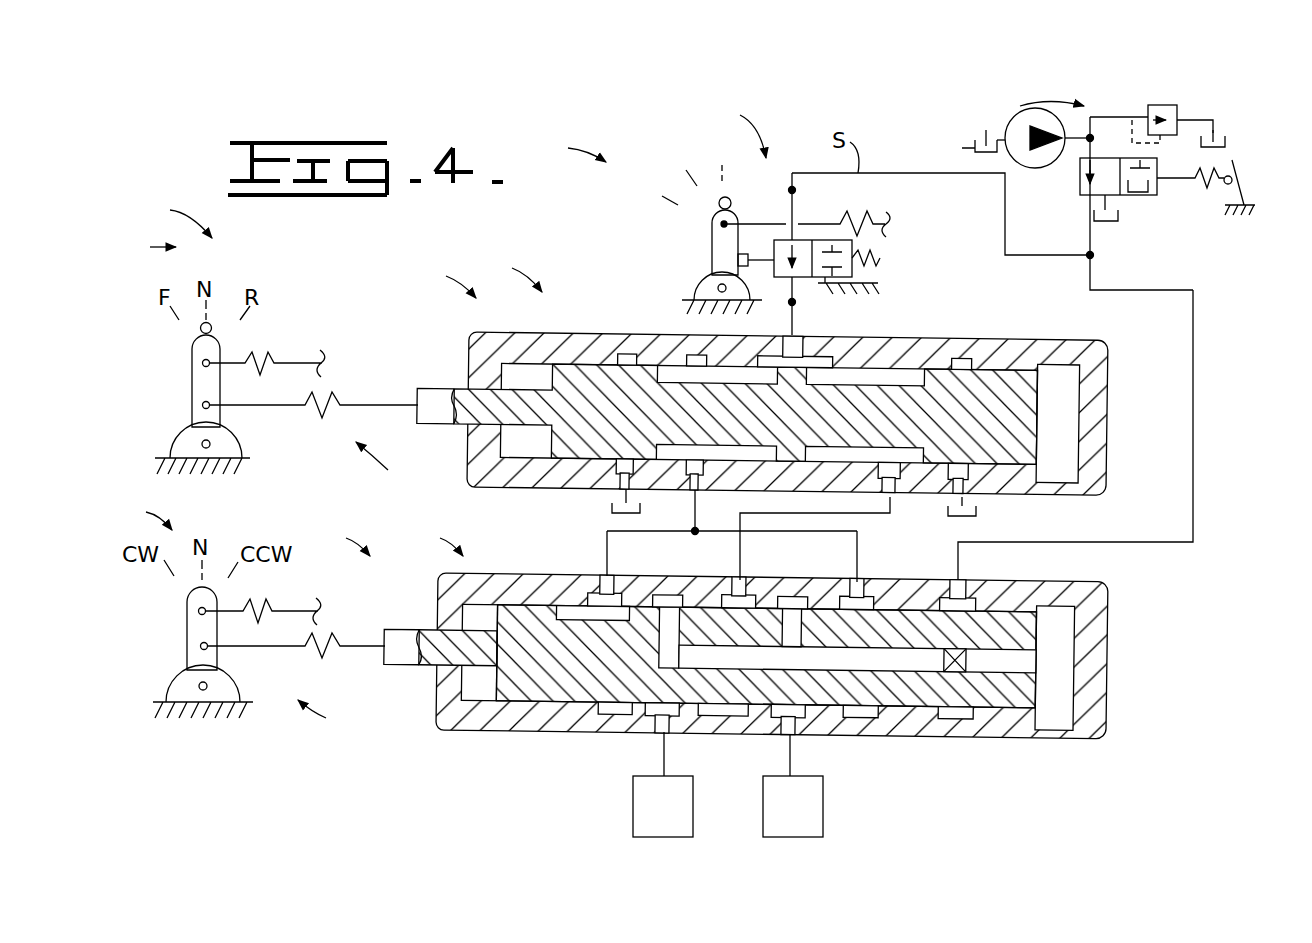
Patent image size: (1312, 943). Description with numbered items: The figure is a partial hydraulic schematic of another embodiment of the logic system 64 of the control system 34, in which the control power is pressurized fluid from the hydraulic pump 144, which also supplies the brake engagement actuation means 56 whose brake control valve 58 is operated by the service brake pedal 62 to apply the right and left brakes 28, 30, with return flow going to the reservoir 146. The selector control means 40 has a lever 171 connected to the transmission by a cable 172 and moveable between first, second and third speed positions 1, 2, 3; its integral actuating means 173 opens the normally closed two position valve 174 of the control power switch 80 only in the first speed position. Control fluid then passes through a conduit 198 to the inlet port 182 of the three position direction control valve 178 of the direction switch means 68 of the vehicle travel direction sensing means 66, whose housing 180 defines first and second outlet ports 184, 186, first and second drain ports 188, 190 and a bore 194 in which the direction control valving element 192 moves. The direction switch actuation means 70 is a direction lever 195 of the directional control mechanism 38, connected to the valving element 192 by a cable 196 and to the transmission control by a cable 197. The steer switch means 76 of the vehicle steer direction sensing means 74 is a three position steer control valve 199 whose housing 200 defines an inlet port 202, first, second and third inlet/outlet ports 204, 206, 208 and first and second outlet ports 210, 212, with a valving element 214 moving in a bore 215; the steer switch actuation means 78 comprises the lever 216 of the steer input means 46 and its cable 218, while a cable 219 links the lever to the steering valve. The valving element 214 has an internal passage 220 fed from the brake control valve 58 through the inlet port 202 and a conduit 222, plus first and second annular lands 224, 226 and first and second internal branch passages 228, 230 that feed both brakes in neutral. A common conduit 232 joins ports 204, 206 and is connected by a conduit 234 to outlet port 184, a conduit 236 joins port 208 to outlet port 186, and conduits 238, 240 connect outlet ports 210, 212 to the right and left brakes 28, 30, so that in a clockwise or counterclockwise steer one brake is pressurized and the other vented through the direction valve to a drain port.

The first speed position 1 is at (723, 160).
The second speed position 2 is at (682, 167).
The third speed position 3 is at (659, 192).
The right brake 28 is at (823, 815).
The left brake 30 is at (633, 812).
The control system 34 is at (139, 247).
The directional control mechanism 38 is at (170, 333).
The selector control means 40 is at (568, 147).
The steer input means 46 is at (137, 514).
The brake engagement actuation means 56 is at (1035, 128).
The brake control valve 58 is at (1160, 200).
The service brake pedal 62 is at (1240, 176).
The logic system 64 is at (169, 218).
The vehicle travel direction sensing means 66 is at (443, 279).
The direction switch means 68 is at (508, 271).
The direction switch actuation means 70 is at (386, 462).
The vehicle steer direction sensing means 74 is at (338, 538).
The steer switch means 76 is at (433, 538).
The steer switch actuation means 78 is at (327, 716).
The control power switch 80 is at (732, 130).
The hydraulic pump 144 is at (1010, 124).
The reservoir 146 is at (962, 148).
The lever 171 is at (718, 245).
The cable 172 is at (814, 222).
The actuating means 173 is at (746, 232).
The two position valve 174 is at (848, 290).
The three position direction control valve 178 is at (469, 366).
The housing 180 is at (557, 337).
The inlet port 182 is at (786, 338).
The first outlet port 184 is at (694, 490).
The second outlet port 186 is at (888, 497).
The first drain port 188 is at (622, 489).
The second drain port 190 is at (966, 497).
The direction control valving element 192 is at (648, 417).
The bore 194 is at (905, 364).
The direction lever 195 is at (198, 386).
The cable 196 is at (272, 405).
The cable 197 is at (293, 355).
The conduit 198 is at (800, 316).
The three position steer control valve 199 is at (438, 606).
The housing 200 is at (480, 578).
The inlet port 202 is at (960, 588).
The first inlet/outlet port 204 is at (606, 582).
The second inlet/outlet port 206 is at (858, 588).
The third inlet/outlet port 208 is at (740, 582).
The first outlet port 210 is at (795, 738).
The second outlet port 212 is at (660, 738).
The valving element 214 is at (576, 665).
The bore 215 is at (546, 696).
The lever 216 is at (194, 626).
The cable 218 is at (272, 647).
The cable 219 is at (282, 610).
The internal passage 220 is at (879, 665).
The conduit 222 is at (1195, 400).
The first annular land 224 is at (835, 606).
The second annular land 226 is at (594, 590).
The first internal branch passage 228 is at (762, 648).
The second internal branch passage 230 is at (657, 655).
The common conduit 232 is at (660, 534).
The conduit 234 is at (697, 518).
The conduit 236 is at (762, 518).
The conduit 238 is at (793, 760).
The conduit 240 is at (668, 764).